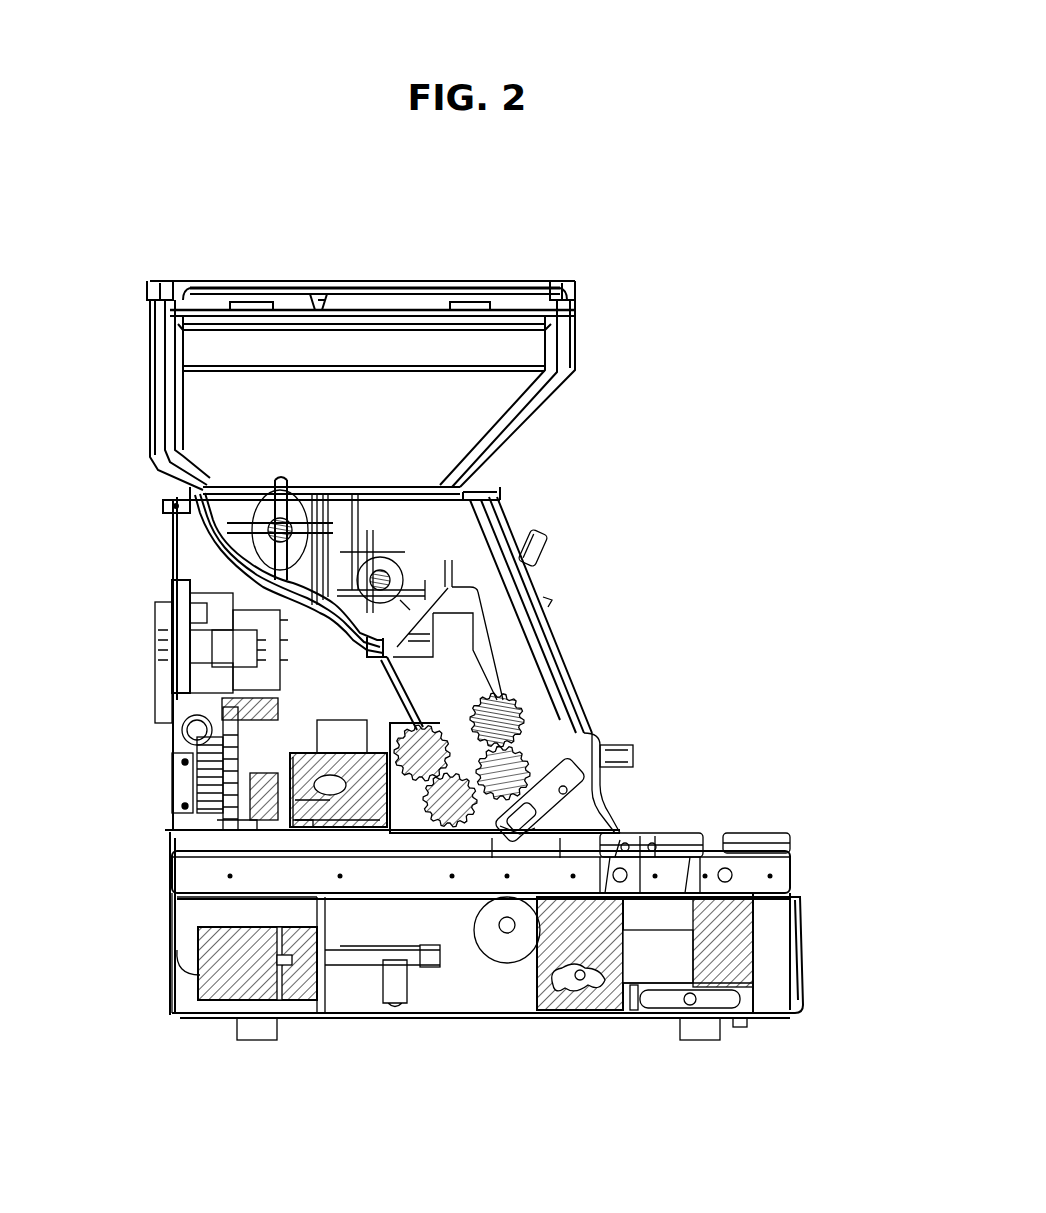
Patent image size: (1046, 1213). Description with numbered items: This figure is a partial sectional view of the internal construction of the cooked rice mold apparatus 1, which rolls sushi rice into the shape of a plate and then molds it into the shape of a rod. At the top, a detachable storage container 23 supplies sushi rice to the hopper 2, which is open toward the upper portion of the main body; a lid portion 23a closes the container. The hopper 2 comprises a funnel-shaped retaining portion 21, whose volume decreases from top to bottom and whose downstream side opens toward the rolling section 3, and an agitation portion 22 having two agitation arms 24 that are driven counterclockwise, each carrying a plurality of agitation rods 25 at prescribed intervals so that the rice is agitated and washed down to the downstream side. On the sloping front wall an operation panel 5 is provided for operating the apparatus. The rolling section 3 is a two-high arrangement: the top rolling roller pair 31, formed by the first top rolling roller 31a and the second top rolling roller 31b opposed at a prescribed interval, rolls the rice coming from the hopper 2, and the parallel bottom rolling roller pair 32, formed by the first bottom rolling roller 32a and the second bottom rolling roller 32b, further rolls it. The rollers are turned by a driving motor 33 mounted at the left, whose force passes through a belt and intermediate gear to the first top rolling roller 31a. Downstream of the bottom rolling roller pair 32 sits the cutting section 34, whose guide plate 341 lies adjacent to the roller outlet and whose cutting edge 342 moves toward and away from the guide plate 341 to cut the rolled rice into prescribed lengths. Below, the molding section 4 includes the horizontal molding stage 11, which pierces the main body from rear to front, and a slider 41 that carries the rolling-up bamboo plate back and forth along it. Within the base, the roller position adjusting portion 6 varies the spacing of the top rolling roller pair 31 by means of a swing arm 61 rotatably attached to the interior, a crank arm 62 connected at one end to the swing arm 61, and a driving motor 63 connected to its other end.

The cooked rice mold apparatus 1 is at (765, 527).
The hopper 2 is at (507, 483).
The rolling section 3 is at (773, 650).
The molding section 4 is at (889, 857).
The operation panel 5 is at (567, 552).
The roller position adjusting portion 6 is at (770, 945).
The molding stage 11 is at (218, 927).
The retaining portion 21 is at (213, 537).
The agitation portion 22 is at (386, 400).
The storage container 23 is at (150, 352).
The hopper lid 23a is at (412, 282).
The agitation arm 24 is at (307, 497).
The agitation rod 25 is at (262, 468).
The top rolling roller pair 31 is at (682, 597).
The first top rolling roller 31a is at (440, 733).
The second top rolling roller 31b is at (505, 697).
The bottom rolling roller pair 32 is at (743, 672).
The first bottom rolling roller 32a is at (475, 783).
The second bottom rolling roller 32b is at (525, 752).
The driving motor 33 is at (345, 745).
The cutting section 34 is at (703, 752).
The guide plate 341 is at (618, 758).
The cutting edge 342 is at (540, 810).
The slider 41 is at (760, 840).
The swing arm 61 is at (733, 972).
The crank arm 62 is at (565, 1000).
The driving motor 63 is at (222, 988).